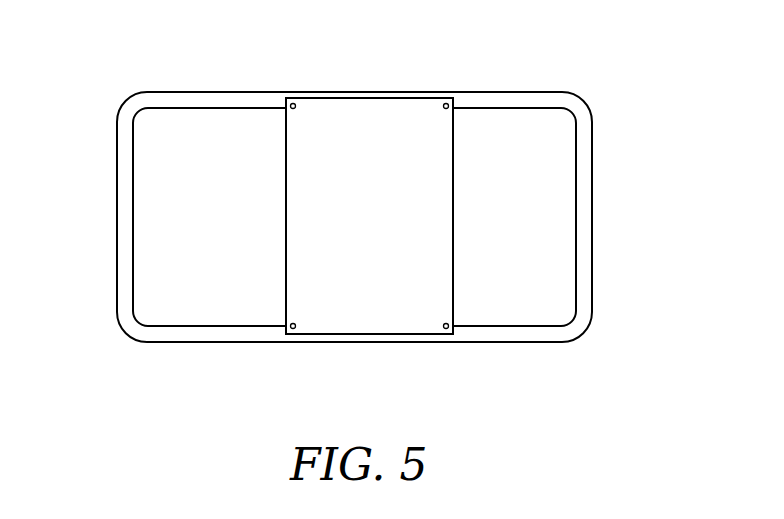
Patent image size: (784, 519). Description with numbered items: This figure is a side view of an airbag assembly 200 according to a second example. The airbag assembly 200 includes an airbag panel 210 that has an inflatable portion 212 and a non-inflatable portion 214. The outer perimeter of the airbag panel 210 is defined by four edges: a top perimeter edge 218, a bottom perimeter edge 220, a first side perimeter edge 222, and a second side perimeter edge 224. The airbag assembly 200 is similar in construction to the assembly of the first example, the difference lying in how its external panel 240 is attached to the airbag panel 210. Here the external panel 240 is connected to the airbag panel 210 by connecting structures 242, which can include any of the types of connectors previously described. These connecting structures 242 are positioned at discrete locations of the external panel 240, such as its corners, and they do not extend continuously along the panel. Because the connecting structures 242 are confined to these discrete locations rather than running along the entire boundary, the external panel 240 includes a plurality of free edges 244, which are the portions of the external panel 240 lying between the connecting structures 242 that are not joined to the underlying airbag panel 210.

The airbag assembly 200 is at (118, 36).
The airbag panel 210 is at (117, 148).
The inflatable portion 212 is at (143, 185).
The non-inflatable portion 214 is at (125, 224).
The top perimeter edge 218 is at (518, 92).
The bottom perimeter edge 220 is at (172, 342).
The first side perimeter edge 222 is at (117, 259).
The second side perimeter edge 224 is at (592, 147).
The external panel 240 is at (284, 123).
The connecting structures 242 is at (294, 109).
The free edges 244 is at (370, 98).